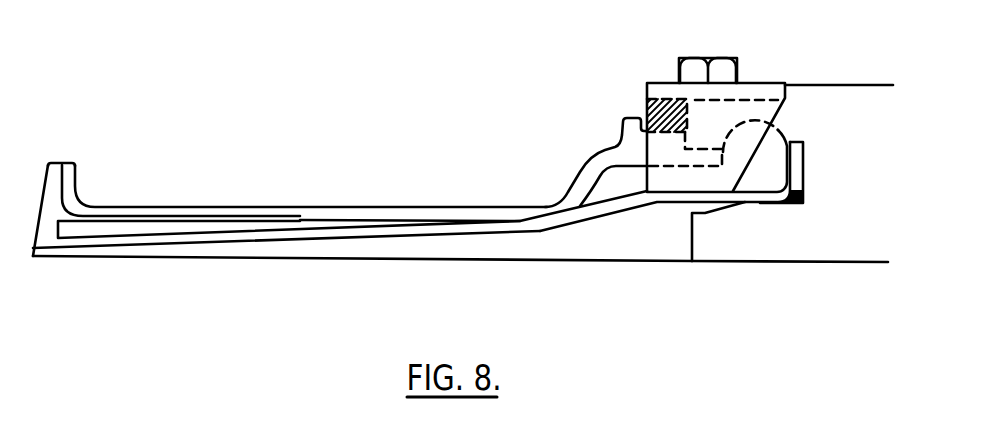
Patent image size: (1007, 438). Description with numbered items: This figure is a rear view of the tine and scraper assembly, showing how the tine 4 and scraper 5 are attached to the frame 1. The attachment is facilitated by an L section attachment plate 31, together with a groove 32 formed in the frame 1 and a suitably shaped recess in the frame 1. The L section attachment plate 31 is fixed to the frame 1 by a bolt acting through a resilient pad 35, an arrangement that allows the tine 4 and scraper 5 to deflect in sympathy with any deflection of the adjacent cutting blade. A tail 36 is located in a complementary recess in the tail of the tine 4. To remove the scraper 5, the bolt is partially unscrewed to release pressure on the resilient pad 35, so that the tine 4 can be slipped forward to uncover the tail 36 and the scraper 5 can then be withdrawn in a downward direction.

The frame 1 is at (818, 242).
The tine 4 is at (180, 260).
The scraper 5 is at (597, 214).
The L section attachment plate 31 is at (738, 78).
The groove 32 is at (803, 193).
The resilient pad 35 is at (646, 106).
The tail 36 is at (795, 158).